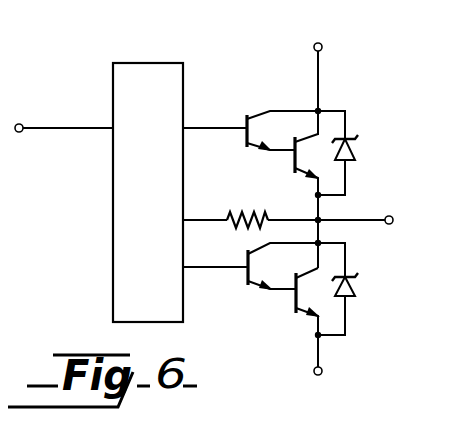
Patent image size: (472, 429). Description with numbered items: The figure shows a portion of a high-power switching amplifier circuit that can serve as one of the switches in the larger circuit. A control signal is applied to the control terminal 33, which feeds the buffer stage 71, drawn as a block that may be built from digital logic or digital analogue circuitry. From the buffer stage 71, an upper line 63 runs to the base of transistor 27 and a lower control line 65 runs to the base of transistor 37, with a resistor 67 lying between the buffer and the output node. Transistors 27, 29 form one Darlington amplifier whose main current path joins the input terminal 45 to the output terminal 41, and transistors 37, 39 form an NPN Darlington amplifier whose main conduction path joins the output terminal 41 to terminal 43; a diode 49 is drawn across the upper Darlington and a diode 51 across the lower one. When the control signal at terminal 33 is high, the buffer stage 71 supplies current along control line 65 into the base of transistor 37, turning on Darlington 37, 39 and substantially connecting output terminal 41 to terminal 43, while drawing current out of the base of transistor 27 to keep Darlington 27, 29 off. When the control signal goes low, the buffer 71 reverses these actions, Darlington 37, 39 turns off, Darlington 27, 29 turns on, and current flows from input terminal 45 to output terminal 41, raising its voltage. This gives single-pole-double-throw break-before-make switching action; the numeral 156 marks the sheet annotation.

The buffer stage 71 is at (148, 62).
The control terminal 33 is at (22, 133).
The drive line 63 is at (205, 127).
The control line 65 is at (215, 268).
The resistor 67 is at (251, 208).
The output terminal 41 is at (389, 215).
The input terminal 45 is at (322, 47).
The terminal 43 is at (322, 372).
The transistor 27 is at (252, 114).
The transistor 29 is at (304, 143).
The transistor 37 is at (263, 250).
The transistor 39 is at (308, 277).
The zener diode 49 is at (356, 137).
The zener diode 51 is at (352, 268).
The annotation 156 is at (471, 408).